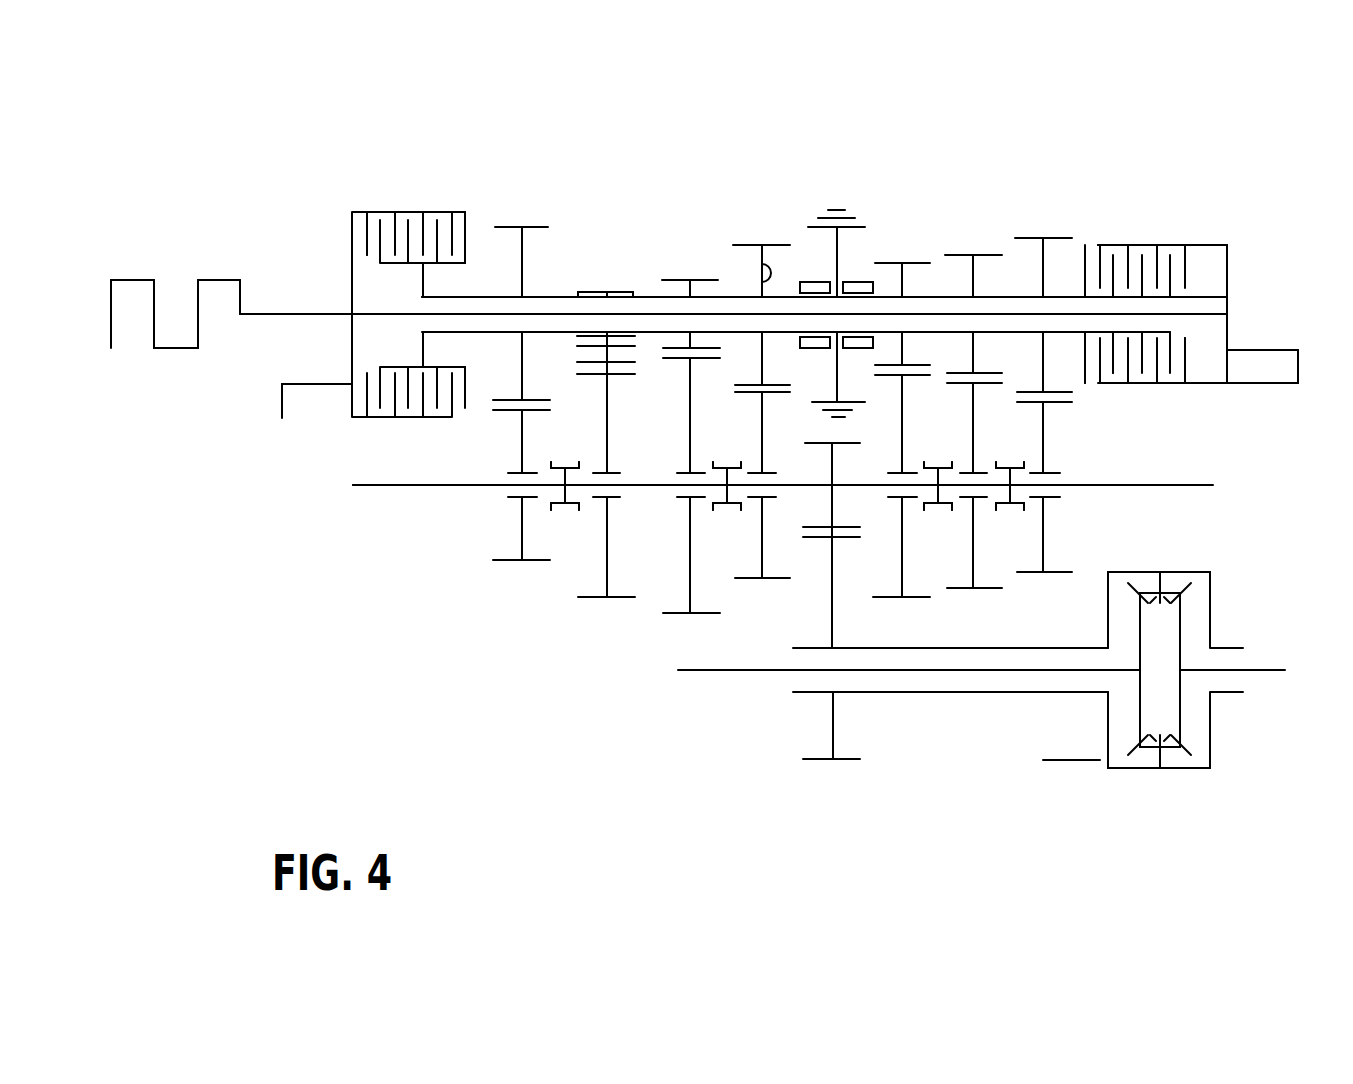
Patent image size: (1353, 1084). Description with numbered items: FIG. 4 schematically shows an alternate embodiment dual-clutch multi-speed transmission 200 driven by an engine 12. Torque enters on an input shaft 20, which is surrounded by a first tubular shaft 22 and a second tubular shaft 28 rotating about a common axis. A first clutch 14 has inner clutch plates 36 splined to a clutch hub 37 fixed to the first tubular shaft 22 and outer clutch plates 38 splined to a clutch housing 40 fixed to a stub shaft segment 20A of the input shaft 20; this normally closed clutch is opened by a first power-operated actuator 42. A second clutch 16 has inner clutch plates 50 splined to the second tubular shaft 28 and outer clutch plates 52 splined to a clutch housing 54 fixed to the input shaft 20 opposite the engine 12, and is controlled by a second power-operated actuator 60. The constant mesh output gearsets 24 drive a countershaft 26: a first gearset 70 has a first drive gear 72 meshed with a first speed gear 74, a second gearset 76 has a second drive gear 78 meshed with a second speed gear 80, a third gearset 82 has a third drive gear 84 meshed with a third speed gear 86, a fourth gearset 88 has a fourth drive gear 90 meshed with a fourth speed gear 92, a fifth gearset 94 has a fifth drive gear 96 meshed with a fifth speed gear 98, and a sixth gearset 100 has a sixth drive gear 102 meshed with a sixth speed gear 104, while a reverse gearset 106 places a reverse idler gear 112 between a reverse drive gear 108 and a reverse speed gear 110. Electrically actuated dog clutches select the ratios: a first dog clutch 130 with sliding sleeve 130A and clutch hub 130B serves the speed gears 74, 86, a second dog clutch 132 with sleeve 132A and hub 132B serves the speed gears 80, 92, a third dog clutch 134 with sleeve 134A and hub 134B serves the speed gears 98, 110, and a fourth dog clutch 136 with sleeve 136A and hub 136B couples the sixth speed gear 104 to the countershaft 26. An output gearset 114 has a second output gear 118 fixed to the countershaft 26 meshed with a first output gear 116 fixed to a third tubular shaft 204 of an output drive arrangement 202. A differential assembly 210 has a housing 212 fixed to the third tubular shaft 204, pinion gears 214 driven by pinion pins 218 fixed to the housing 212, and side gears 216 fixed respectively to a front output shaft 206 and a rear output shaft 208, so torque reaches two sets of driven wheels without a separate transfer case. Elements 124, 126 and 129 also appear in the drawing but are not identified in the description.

The engine 12 is at (200, 272).
The first clutch 14 is at (367, 207).
The second clutch 16 is at (1153, 235).
The input shaft 20 is at (473, 317).
The stub shaft segment 20A is at (287, 308).
The first tubular shaft 22 is at (573, 295).
The output gearsets 24 is at (655, 667).
The countershaft 26 is at (367, 490).
The second tubular shaft 28 is at (1067, 297).
The inner clutch plates 36 is at (466, 237).
The clutch hub 37 is at (422, 278).
The outer clutch plates 38 is at (367, 230).
The clutch housing 40 is at (352, 262).
The first power-operated actuator 42 is at (290, 400).
The inner clutch plates 50 is at (1112, 358).
The outer clutch plates 52 is at (1185, 367).
The clutch housing 54 is at (1208, 245).
The second power-operated actuator 60 is at (1283, 373).
The first gearset 70 is at (703, 278).
The first drive gear 72 is at (667, 280).
The first speed gear 74 is at (690, 568).
The second gearset 76 is at (892, 262).
The second drive gear 78 is at (905, 278).
The second speed gear 80 is at (902, 577).
The third gearset 82 is at (758, 243).
The third drive gear 84 is at (750, 270).
The third speed gear 86 is at (752, 550).
The fourth gearset 88 is at (967, 253).
The fourth drive gear 90 is at (975, 277).
The fourth speed gear 92 is at (975, 572).
The fifth gearset 94 is at (520, 223).
The fifth drive gear 96 is at (523, 250).
The fifth speed gear 98 is at (518, 530).
The sixth gearset 100 is at (1033, 232).
The sixth drive gear 102 is at (1043, 257).
The sixth speed gear 104 is at (1045, 543).
The reverse gearset 106 is at (603, 612).
The reverse drive gear 108 is at (617, 292).
The reverse speed gear 110 is at (603, 537).
The reverse idler gear 112 is at (612, 355).
The output gearset 114 is at (833, 777).
The first output gear 116 is at (830, 610).
The second output gear 118 is at (832, 458).
The one-way clutch 124 is at (835, 250).
The outer race 126 is at (807, 282).
The inner race 129 is at (872, 288).
The first dog clutch 130 is at (727, 515).
The sliding sleeve 130A is at (717, 467).
The clutch hub 130B is at (727, 478).
The second dog clutch 132 is at (938, 515).
The sliding sleeve 132A is at (927, 467).
The clutch hub 132B is at (940, 478).
The third dog clutch 134 is at (567, 517).
The sliding sleeve 134A is at (560, 463).
The clutch hub 134B is at (567, 477).
The fourth dog clutch 136 is at (1010, 515).
The sliding sleeve 136A is at (1007, 467).
The clutch hub 136B is at (1010, 477).
The dual-clutch multi-speed transmission 200 is at (423, 553).
The output drive arrangement 202 is at (1043, 770).
The third tubular shaft 204 is at (880, 693).
The front output shaft 206 is at (757, 672).
The rear output shaft 208 is at (1265, 675).
The differential assembly 210 is at (1213, 608).
The housing 212 is at (1167, 583).
The pinion gears 214 is at (1147, 590).
The side gears 216 is at (1180, 703).
The pinion pins 218 is at (1162, 583).